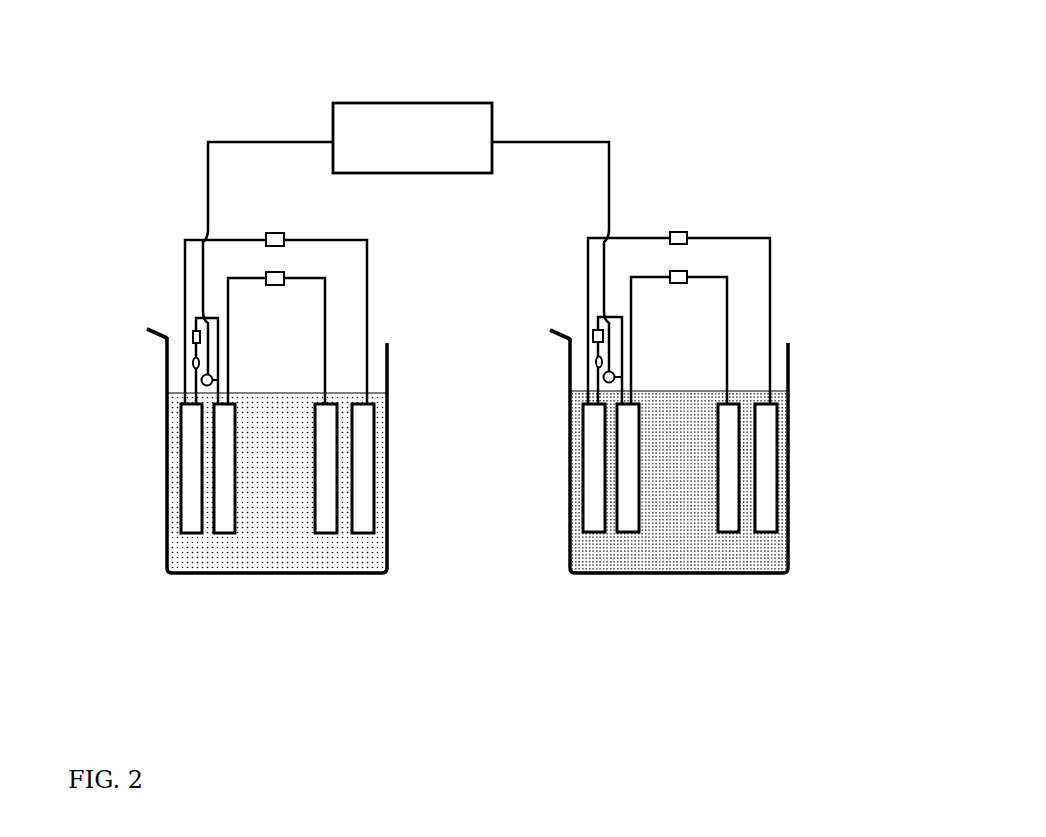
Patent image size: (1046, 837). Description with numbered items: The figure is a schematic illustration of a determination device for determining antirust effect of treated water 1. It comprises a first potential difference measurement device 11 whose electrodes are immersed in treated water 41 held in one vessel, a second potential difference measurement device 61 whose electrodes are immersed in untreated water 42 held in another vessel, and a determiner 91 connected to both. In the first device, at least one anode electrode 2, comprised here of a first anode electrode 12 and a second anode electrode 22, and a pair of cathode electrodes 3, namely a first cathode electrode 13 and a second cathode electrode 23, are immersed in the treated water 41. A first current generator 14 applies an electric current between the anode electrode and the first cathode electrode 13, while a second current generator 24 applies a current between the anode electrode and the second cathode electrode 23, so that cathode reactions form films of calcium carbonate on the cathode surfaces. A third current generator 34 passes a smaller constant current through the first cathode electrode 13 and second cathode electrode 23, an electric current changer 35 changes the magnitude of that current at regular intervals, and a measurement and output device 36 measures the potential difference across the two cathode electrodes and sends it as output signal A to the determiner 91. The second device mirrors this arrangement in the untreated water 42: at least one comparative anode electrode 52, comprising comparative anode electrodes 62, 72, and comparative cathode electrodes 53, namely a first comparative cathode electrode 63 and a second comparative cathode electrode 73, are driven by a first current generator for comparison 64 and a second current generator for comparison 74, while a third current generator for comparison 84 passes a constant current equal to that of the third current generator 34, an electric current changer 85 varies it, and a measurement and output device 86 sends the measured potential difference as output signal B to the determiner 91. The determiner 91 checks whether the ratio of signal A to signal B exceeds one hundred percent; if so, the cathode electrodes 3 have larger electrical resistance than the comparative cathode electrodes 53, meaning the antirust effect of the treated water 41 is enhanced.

The determination device for determining antirust effect of treated water 1 is at (182, 82).
The first potential difference measurement device 11 is at (142, 236).
The second potential difference measurement device 61 is at (815, 188).
The determiner 91 is at (465, 108).
The first current generator 14 is at (290, 232).
The second current generator 24 is at (297, 270).
The first current generator for comparison 64 is at (693, 222).
The second current generator for comparison 74 is at (705, 265).
The third current generator 34 is at (193, 330).
The electric current changer 35 is at (193, 364).
The measurement and output device 36 is at (203, 387).
The third current generator for comparison 84 is at (593, 338).
The electric current changer 85 is at (595, 363).
The measurement and output device 86 is at (604, 385).
The treated water 41 is at (367, 568).
The untreated water 42 is at (778, 563).
The anode electrode 2 is at (453, 395).
The cathode electrodes 3 is at (102, 448).
The comparative anode electrode 52 is at (865, 380).
The comparative cathode electrodes 53 is at (500, 493).
The first anode electrode 12 is at (367, 465).
The second anode electrode 22 is at (327, 437).
The first cathode electrode 13 is at (190, 450).
The second cathode electrode 23 is at (225, 470).
The comparative anode electrode 62 is at (768, 480).
The comparative anode electrode 72 is at (733, 450).
The first comparative cathode electrode 63 is at (587, 462).
The second comparative cathode electrode 73 is at (625, 488).